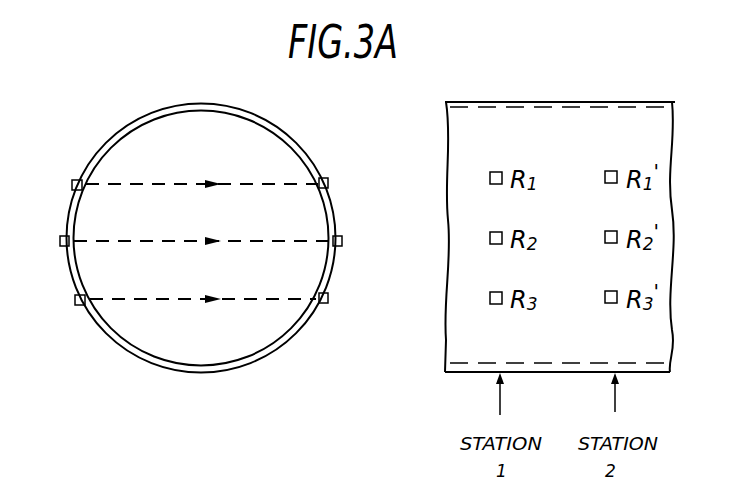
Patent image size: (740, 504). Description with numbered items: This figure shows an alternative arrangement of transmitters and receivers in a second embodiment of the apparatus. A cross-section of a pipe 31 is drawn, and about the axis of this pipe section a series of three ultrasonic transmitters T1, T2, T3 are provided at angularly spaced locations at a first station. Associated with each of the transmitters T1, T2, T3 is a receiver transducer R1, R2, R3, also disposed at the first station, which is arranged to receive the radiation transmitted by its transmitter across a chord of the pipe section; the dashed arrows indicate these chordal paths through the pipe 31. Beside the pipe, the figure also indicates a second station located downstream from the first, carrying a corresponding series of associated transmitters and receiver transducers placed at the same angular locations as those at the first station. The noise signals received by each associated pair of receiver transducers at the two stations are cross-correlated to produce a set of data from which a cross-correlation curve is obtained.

The pipe 31 is at (285, 132).
The ultrasonic transmitter T1 is at (58, 182).
The ultrasonic transmitter T2 is at (48, 239).
The ultrasonic transmitter T3 is at (60, 297).
The receiver transducer R1 is at (342, 184).
The receiver transducer R2 is at (353, 241).
The receiver transducer R3 is at (342, 299).